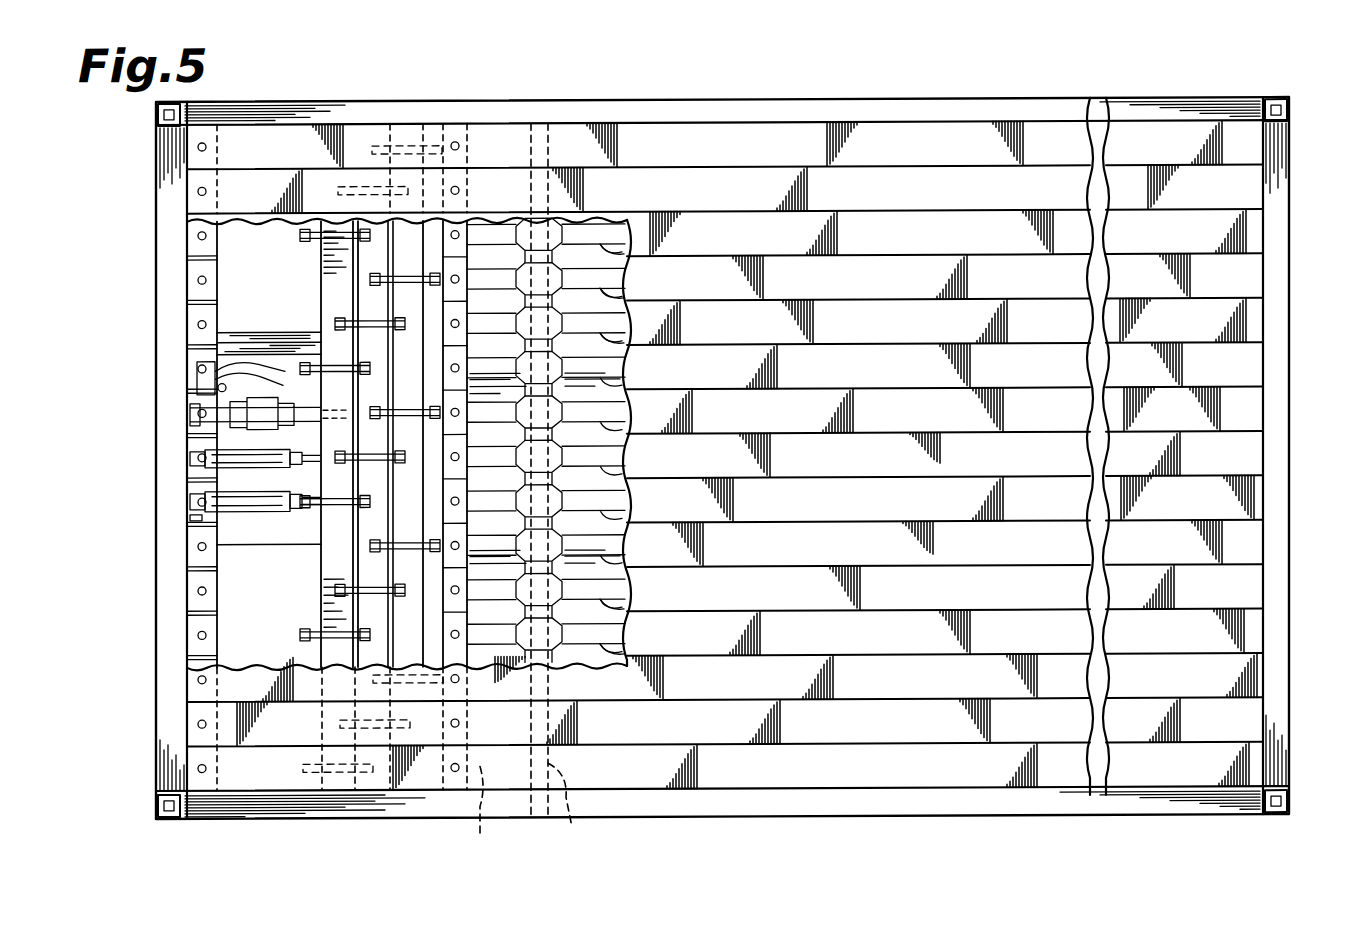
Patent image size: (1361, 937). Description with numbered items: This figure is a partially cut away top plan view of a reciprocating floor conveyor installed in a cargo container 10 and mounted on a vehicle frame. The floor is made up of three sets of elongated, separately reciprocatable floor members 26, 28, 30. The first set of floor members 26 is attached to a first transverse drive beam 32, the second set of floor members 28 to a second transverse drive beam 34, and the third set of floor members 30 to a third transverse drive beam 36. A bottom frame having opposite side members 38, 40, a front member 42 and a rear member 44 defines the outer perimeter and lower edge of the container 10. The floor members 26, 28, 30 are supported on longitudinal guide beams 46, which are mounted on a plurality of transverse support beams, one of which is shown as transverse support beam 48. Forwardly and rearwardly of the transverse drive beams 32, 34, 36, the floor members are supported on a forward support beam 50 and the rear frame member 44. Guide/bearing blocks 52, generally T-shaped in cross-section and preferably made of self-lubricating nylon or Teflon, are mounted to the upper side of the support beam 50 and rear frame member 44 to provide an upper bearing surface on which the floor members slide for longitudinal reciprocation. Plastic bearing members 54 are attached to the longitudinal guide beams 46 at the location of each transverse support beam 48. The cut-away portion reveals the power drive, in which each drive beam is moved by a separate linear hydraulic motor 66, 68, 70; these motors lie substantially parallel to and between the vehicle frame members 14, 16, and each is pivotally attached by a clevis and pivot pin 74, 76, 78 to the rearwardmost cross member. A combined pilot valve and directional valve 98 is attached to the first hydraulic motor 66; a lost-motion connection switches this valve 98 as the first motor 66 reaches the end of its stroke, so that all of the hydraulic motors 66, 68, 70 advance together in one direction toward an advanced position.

The container 10 is at (768, 90).
The frame member 14 is at (256, 338).
The frame member 16 is at (250, 566).
The first set of floor members 26 is at (1250, 148).
The second set of floor members 28 is at (1246, 192).
The third set of floor members 30 is at (1246, 240).
The first transverse drive beam 32 is at (424, 276).
The second transverse drive beam 34 is at (371, 459).
The third transverse drive beam 36 is at (354, 303).
The side member 38 is at (654, 104).
The side member 40 is at (746, 804).
The front member 42 is at (1266, 768).
The rear frame member 44 is at (160, 217).
The longitudinal guide beam 46 is at (600, 238).
The transverse support beam 48 is at (583, 811).
The forward support beam 50 is at (484, 819).
The guide/bearing block 52 is at (190, 300).
The plastic bearing member 54 is at (540, 448).
The linear hydraulic motor 66 is at (198, 450).
The linear hydraulic motor 68 is at (202, 492).
The linear hydraulic motor 70 is at (200, 518).
The clevis and pivot pin 74 is at (192, 413).
The clevis and pivot pin 76 is at (192, 458).
The clevis and pivot pin 78 is at (196, 502).
The combined pilot valve and directional valve 98 is at (196, 376).